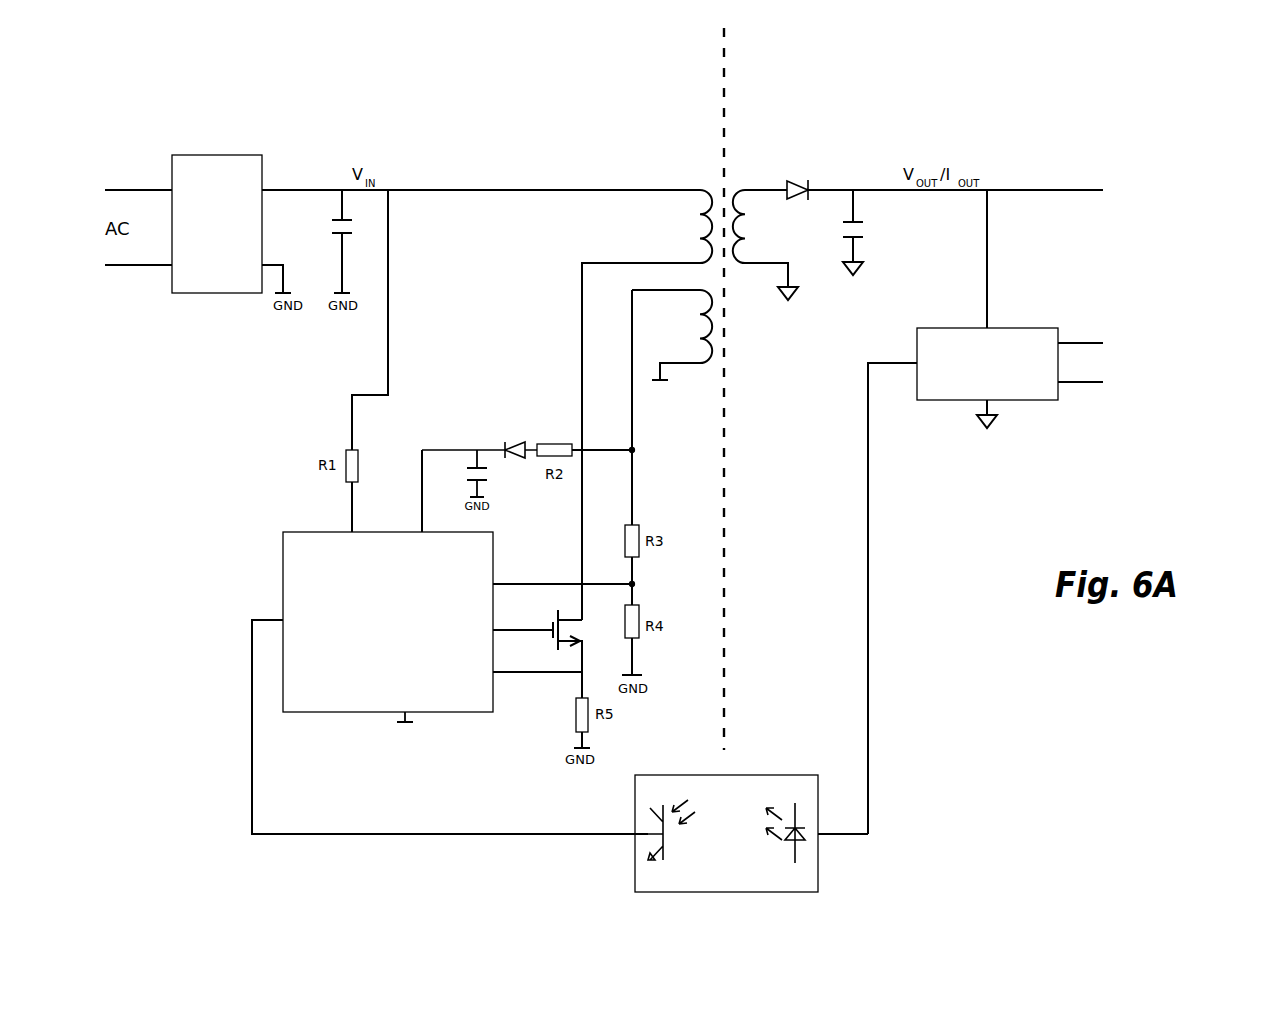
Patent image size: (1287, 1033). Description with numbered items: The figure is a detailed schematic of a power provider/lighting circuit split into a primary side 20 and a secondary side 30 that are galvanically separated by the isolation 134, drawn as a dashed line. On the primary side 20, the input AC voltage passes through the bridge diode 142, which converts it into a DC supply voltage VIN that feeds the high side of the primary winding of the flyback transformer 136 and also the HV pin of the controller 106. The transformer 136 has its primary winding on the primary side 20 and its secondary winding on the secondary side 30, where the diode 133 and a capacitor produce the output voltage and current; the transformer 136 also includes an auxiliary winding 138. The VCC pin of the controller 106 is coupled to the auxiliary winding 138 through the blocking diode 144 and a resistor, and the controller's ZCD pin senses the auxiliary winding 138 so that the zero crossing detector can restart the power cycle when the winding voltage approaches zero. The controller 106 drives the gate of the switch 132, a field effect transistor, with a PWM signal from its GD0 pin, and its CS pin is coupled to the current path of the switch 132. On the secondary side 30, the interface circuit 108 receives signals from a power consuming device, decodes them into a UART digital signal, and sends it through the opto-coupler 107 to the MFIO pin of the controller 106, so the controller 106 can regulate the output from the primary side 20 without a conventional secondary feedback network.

The primary side 20 is at (466, 120).
The secondary side 30 is at (986, 120).
The controller 106 is at (290, 532).
The opto-coupler 107 is at (694, 775).
The interface circuit 108 is at (1000, 328).
The switch 132 is at (548, 614).
The diode 133 is at (800, 176).
The isolation 134 is at (728, 472).
The flyback transformer 136 is at (706, 182).
The auxiliary winding 138 is at (712, 332).
The bridge diode 142 is at (228, 155).
The blocking diode 144 is at (512, 438).